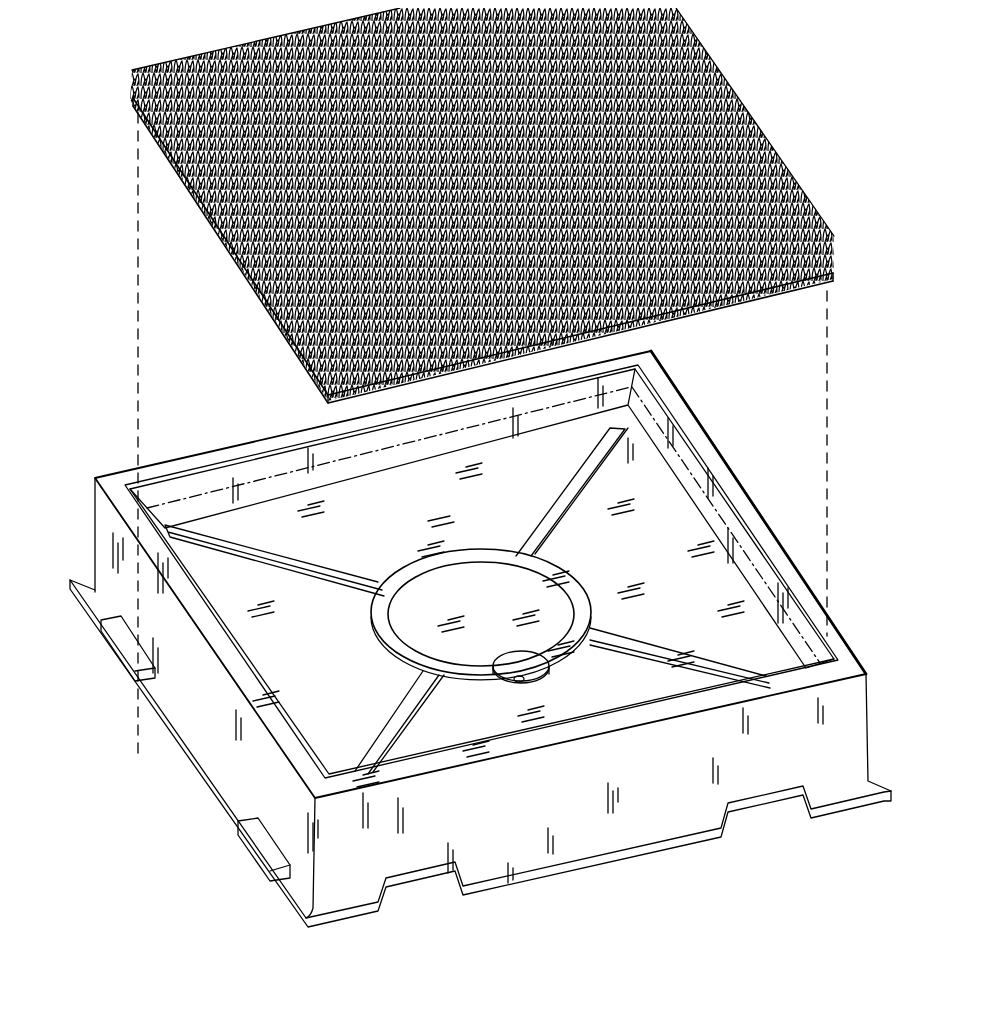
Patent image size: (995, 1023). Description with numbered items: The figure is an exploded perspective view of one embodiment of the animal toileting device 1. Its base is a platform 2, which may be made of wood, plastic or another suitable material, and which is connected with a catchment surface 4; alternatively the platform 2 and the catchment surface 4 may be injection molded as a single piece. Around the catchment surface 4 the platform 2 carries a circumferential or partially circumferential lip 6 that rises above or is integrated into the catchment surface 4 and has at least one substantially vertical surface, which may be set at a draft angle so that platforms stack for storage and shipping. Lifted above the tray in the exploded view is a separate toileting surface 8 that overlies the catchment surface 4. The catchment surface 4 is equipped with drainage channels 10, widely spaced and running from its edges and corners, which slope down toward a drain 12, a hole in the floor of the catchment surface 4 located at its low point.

The animal toileting device 1 is at (69, 60).
The platform 2 is at (851, 722).
The catchment surface 4 is at (722, 570).
The lip 6 is at (677, 445).
The toileting surface 8 is at (720, 94).
The drainage channels 10 is at (573, 603).
The drain 12 is at (527, 673).